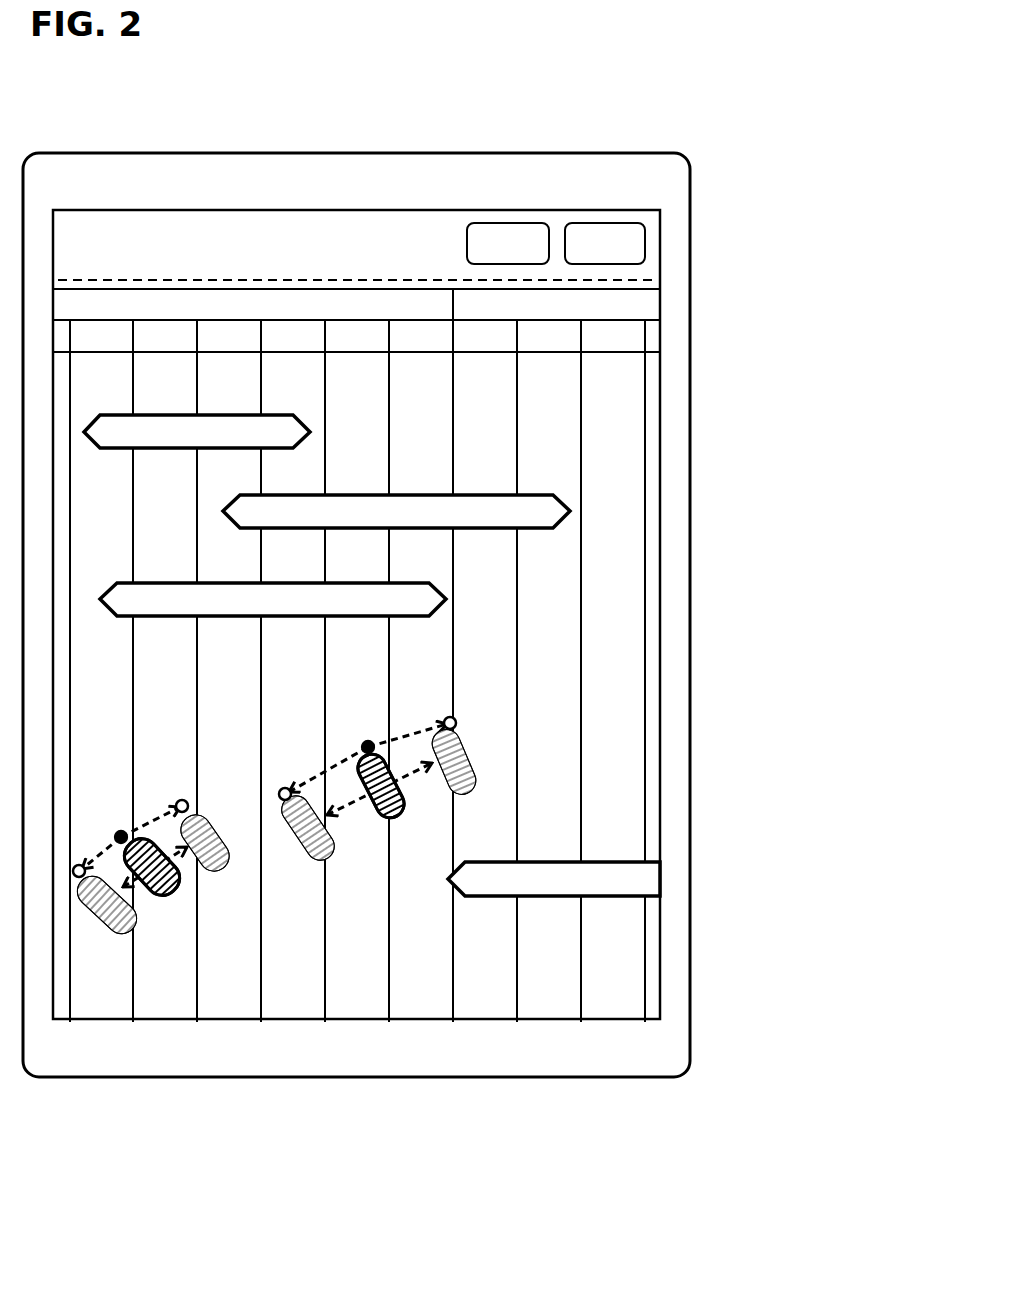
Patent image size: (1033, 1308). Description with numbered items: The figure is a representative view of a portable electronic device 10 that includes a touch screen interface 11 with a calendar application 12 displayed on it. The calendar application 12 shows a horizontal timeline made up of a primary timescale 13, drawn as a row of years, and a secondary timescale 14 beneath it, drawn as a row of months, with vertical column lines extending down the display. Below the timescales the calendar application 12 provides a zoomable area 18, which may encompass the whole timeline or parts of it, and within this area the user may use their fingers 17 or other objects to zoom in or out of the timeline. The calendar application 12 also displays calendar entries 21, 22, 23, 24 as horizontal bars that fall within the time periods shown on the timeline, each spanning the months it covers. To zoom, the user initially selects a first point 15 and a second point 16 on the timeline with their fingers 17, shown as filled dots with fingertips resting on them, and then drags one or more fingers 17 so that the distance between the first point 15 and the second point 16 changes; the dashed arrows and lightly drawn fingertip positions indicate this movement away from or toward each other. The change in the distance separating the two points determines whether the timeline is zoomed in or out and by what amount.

The portable electronic device 10 is at (320, 151).
The touch screen interface 11 is at (610, 1024).
The calendar application 12 is at (357, 251).
The primary timescale 13 is at (664, 305).
The secondary timescale 14 is at (664, 336).
The first point 15 is at (108, 824).
The second point 16 is at (486, 720).
The fingers 17 is at (451, 815).
The zoomable area 18 is at (467, 1004).
The calendar entry 21 is at (197, 431).
The calendar entry 22 is at (396, 511).
The calendar entry 23 is at (273, 599).
The calendar entry 24 is at (554, 879).